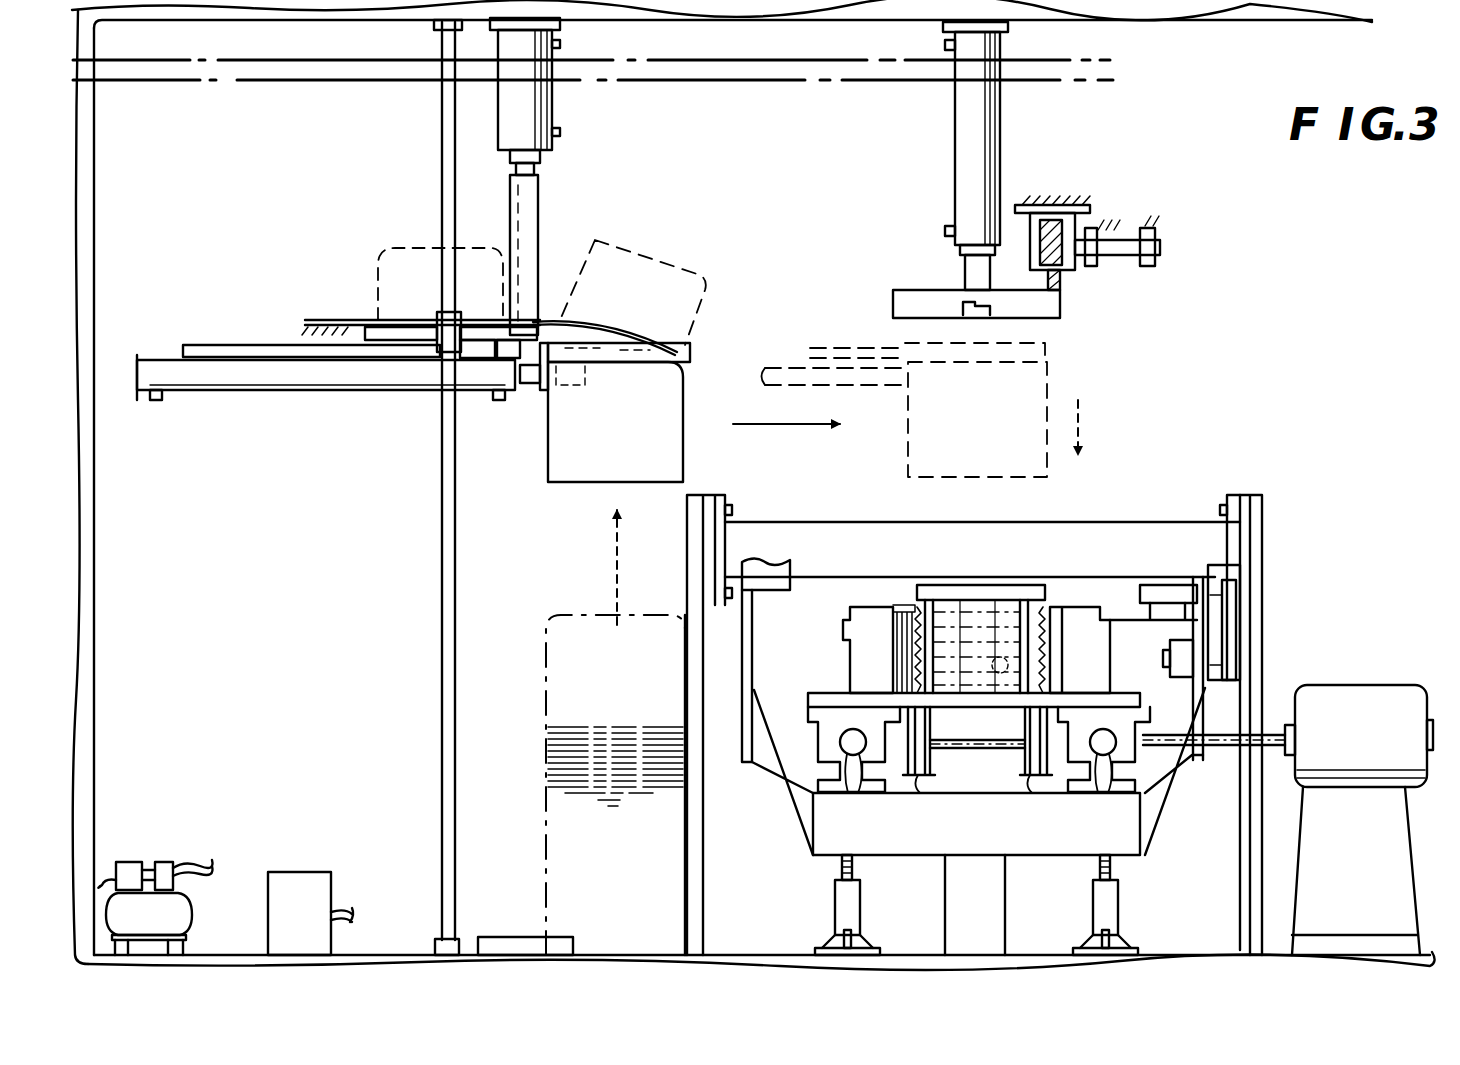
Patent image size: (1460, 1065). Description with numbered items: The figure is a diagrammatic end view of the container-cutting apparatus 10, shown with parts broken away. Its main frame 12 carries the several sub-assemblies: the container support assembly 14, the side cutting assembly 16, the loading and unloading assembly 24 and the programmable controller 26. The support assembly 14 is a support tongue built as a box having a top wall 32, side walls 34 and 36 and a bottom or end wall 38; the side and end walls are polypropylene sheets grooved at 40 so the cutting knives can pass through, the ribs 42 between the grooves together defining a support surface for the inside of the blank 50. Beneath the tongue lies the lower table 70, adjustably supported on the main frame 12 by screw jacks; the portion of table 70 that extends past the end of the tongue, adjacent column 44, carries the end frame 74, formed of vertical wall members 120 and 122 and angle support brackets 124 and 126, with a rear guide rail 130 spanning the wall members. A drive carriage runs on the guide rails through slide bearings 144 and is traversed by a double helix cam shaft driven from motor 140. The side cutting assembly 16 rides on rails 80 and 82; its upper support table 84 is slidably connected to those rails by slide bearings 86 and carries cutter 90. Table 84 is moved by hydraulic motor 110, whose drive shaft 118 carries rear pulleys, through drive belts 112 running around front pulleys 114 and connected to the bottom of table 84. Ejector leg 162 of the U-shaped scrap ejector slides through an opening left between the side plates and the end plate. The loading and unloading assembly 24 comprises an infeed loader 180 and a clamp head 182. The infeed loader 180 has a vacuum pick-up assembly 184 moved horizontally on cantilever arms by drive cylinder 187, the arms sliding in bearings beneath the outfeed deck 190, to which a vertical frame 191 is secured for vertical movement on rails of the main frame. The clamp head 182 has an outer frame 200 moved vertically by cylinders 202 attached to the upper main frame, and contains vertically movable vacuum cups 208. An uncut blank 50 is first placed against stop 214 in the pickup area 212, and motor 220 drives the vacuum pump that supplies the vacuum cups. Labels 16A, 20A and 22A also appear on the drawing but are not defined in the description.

The apparatus 10 is at (1282, 287).
The main frame 12 is at (97, 540).
The container support assembly 14 is at (1000, 578).
The side cutting assembly 16 is at (846, 660).
The support plate 16A is at (920, 655).
The transfer arm 20A is at (915, 283).
The drive coupling 22A is at (1108, 207).
The loading and unloading assembly 24 is at (790, 158).
The programmable controller 26 is at (298, 872).
The top wall 32 is at (981, 610).
The side wall 34 is at (1055, 615).
The side wall 36 is at (915, 607).
The end wall 38 is at (920, 655).
The grooves 40 is at (1000, 750).
The ribs 42 is at (845, 630).
The column 44 is at (985, 913).
The blank 50 is at (690, 426).
The lower table 70 is at (905, 833).
The end frame 74 is at (778, 798).
The rail 80 is at (1100, 785).
The rail 82 is at (849, 793).
The upper support table 84 is at (820, 686).
The slide bearings 86 is at (832, 728).
The cutter 90 is at (1112, 635).
The hydraulic motor 110 is at (1375, 738).
The drive belts 112 is at (915, 790).
The front pulleys 114 is at (1000, 775).
The drive shaft 118 is at (1268, 730).
The vertical wall member 120 is at (1203, 753).
The vertical wall member 122 is at (745, 668).
The angle support bracket 124 is at (1193, 820).
The angle support bracket 126 is at (792, 808).
The rear guide rail 130 is at (778, 560).
The motor 140 is at (1170, 662).
The slide bearings 144 is at (530, 118).
The ejector leg 162 is at (1083, 627).
The infeed loader 180 is at (522, 412).
The clamp head 182 is at (824, 232).
The vacuum pick-up assembly 184 is at (700, 345).
The drive cylinder 187 is at (292, 380).
The outfeed deck 190 is at (356, 318).
The vertical frame 191 is at (530, 256).
The outer frame 200 is at (892, 300).
The cylinders 202 is at (980, 127).
The vacuum cups 208 is at (1030, 318).
The pickup area 212 is at (584, 604).
The stop 214 is at (521, 937).
The motor 220 is at (153, 862).